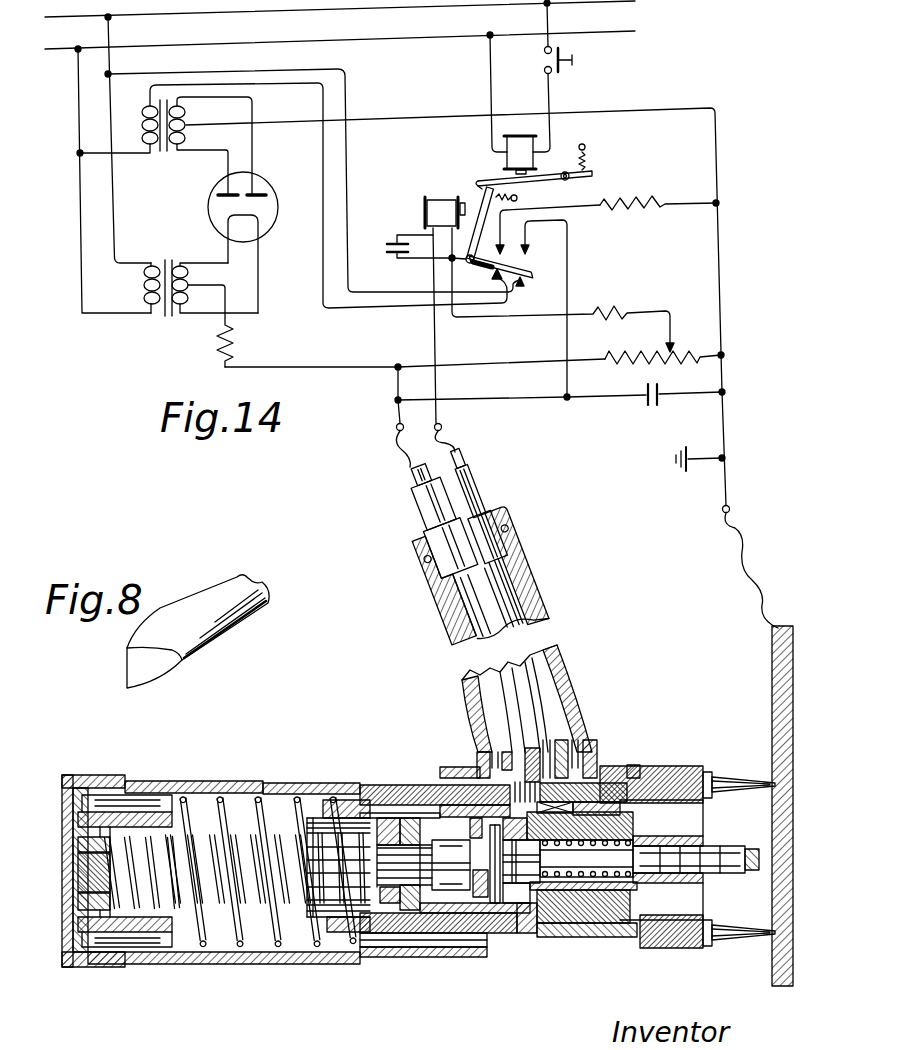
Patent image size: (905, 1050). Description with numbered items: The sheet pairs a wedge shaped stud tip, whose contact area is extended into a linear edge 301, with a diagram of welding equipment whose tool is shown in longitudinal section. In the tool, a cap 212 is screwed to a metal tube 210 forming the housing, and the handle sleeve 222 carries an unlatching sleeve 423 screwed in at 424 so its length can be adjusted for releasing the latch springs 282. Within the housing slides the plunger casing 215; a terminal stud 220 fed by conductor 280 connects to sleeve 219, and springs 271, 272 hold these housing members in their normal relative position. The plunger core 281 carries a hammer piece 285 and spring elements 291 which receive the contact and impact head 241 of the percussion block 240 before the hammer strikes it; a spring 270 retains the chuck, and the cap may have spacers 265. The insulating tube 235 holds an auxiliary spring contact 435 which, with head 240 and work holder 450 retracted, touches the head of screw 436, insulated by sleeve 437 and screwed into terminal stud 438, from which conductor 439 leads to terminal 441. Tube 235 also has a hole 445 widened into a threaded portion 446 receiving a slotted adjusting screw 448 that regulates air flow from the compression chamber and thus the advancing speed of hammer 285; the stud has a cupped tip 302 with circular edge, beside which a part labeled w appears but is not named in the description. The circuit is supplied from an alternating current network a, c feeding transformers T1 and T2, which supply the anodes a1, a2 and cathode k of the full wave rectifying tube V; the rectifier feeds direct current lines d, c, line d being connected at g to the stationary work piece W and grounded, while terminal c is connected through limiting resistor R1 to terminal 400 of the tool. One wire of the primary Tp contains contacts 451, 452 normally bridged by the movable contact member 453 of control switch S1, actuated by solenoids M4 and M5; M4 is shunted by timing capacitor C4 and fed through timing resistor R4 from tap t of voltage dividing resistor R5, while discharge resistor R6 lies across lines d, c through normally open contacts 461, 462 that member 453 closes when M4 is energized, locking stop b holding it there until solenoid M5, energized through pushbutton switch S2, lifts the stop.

In FIG. 14, the alternating current supply wire a is at (326, 131).
In FIG. 14, the supply wire c is at (631, 407).
In FIG. 14, the direct current supply line d is at (387, 119).
In FIG. 14, the primary of transformer T1 Tp is at (267, 195).
In FIG. 14, the transformer T1 is at (163, 152).
In FIG. 14, the transformer T2 is at (165, 262).
In FIG. 14, the tube V is at (234, 226).
In FIG. 14, the anode a1 is at (218, 193).
In FIG. 14, the anode a2 is at (262, 190).
In FIG. 14, the cathode k is at (260, 243).
In FIG. 14, the limiting resistor R1 is at (217, 341).
In FIG. 14, the pushbutton control switch S2 is at (572, 70).
In FIG. 14, the solenoid M5 is at (506, 157).
In FIG. 14, the solenoid M4 is at (428, 205).
In FIG. 14, the timing capacitor C4 is at (388, 250).
In FIG. 14, the control switch S1 is at (397, 234).
In FIG. 14, the locking stop b is at (478, 186).
In FIG. 14, the movable contact member 453 is at (548, 270).
In FIG. 14, the contact 461 is at (540, 210).
In FIG. 14, the contact 462 is at (552, 247).
In FIG. 14, the switch contact 451 is at (497, 277).
In FIG. 14, the switch contact 452 is at (521, 287).
In FIG. 14, the discharge resistor R6 is at (636, 199).
In FIG. 14, the timing resistor R4 is at (563, 305).
In FIG. 14, the tap t is at (672, 346).
In FIG. 14, the voltage dividing resistor R5 is at (681, 364).
In FIG. 14, the terminal of the welding tool 400 is at (396, 429).
In FIG. 14, the terminal of the supply circuit 441 is at (442, 427).
In FIG. 14, the ground connection g is at (740, 530).
In FIG. 14, the stationary work piece W is at (771, 683).
In FIG. 14, the conductor 280 is at (466, 610).
In FIG. 14, the terminal stud 220 is at (497, 747).
In FIG. 14, the conductor 439 is at (528, 550).
In FIG. 14, the terminal stud 438 is at (584, 752).
In FIG. 14, the insulating sleeve 437 is at (590, 752).
In FIG. 14, the screw 436 is at (600, 752).
In FIG. 14, the auxiliary spring contact 435 is at (612, 752).
In FIG. 14, the hammer carrying tube 235 is at (635, 752).
In FIG. 14, the plunger casing 215 is at (287, 766).
In FIG. 14, the cap 212 is at (120, 972).
In FIG. 14, the handle sleeve 222 is at (140, 960).
In FIG. 14, the threaded connection 424 is at (142, 795).
In FIG. 14, the unlatching sleeve 423 is at (162, 813).
In FIG. 14, the metal tube 210 is at (182, 946).
In FIG. 14, the spring 271 is at (240, 927).
In FIG. 14, the spring 272 is at (262, 897).
In FIG. 14, the metallic tube 219 is at (403, 783).
In FIG. 14, the latch springs 282 is at (317, 817).
In FIG. 14, the core portion 281 is at (395, 940).
In FIG. 14, the hammer piece 285 is at (450, 890).
In FIG. 14, the spring elements 291 is at (470, 945).
In FIG. 14, the contact and impact head 241 is at (496, 880).
In FIG. 14, the percussion block 240 is at (525, 900).
In FIG. 14, the hole 445 is at (540, 925).
In FIG. 14, the spring 270 is at (557, 900).
In FIG. 14, the threaded portion 446 is at (605, 920).
In FIG. 14, the slotted adjusting screw 448 is at (637, 927).
In FIG. 14, the cupped tip 302 is at (760, 862).
In FIG. 14, the rod tip w is at (731, 866).
In FIG. 8, the rod tip w is at (197, 588).
In FIG. 14, the work holder 450 is at (692, 882).
In FIG. 14, the spacers 265 is at (738, 936).
In FIG. 8, the wedge shaped stud tip 301 is at (127, 678).